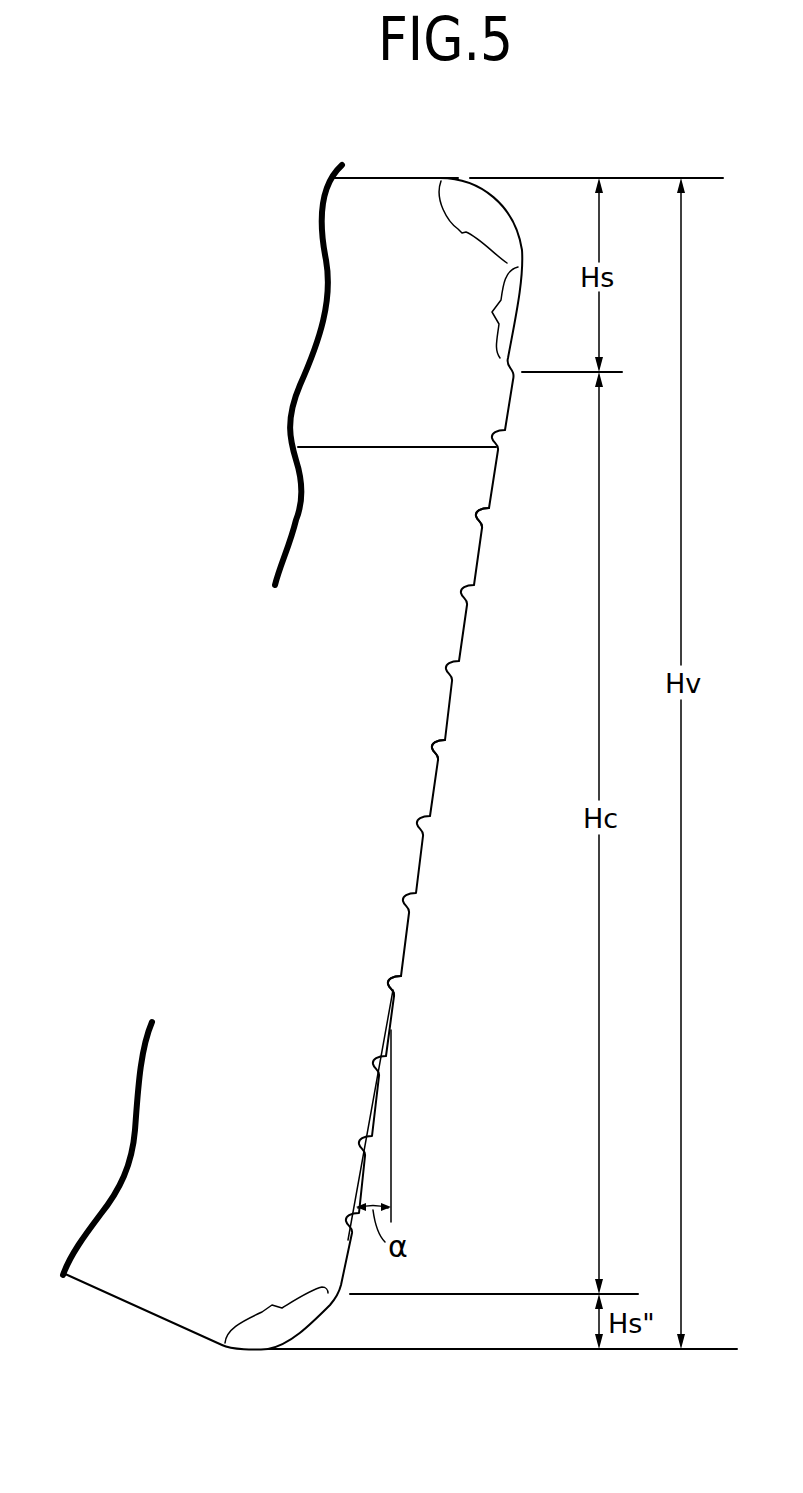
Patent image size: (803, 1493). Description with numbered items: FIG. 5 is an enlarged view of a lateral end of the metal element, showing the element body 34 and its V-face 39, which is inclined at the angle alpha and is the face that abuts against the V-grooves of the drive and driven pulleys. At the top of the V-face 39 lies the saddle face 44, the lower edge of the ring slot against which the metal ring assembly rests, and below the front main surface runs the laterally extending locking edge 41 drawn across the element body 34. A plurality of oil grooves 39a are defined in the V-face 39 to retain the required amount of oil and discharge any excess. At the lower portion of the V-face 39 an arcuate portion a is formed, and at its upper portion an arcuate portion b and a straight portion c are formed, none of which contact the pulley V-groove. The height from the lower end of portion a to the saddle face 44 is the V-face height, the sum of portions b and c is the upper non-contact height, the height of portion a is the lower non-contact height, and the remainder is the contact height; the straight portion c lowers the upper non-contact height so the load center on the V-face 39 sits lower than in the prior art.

The element body 34 is at (276, 815).
The V-face 39 is at (426, 876).
The oil grooves 39a is at (477, 517).
The locking edge 41 is at (408, 447).
The saddle face 44 is at (397, 178).
The arcuate portion a is at (276, 1307).
The arcuate portion b is at (472, 222).
The straight portion c is at (495, 312).